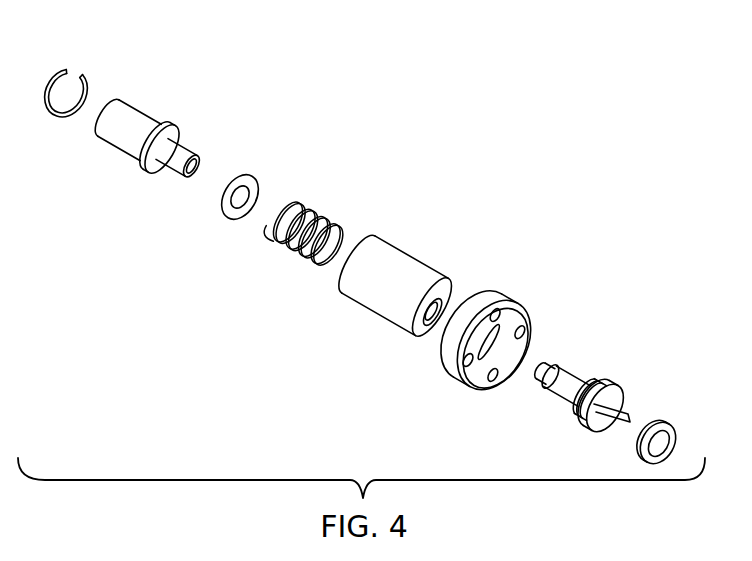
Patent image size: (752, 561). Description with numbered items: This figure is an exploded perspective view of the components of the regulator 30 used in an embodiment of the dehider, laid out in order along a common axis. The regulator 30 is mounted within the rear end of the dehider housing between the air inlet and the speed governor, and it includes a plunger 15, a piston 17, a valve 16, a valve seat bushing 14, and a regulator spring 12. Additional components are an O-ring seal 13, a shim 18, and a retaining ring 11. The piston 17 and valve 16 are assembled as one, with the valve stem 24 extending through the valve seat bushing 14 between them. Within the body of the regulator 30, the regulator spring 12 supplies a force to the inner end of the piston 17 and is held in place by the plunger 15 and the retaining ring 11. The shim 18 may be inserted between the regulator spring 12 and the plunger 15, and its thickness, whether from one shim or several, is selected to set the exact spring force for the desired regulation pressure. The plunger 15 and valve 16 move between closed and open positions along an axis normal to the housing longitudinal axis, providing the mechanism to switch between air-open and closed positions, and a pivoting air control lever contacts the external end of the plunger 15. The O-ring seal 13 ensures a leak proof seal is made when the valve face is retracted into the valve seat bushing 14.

The regulator 30 is at (521, 73).
The retaining ring 11 is at (73, 67).
The plunger 15 is at (165, 129).
The shim 18 is at (245, 172).
The regulator spring 12 is at (325, 214).
The piston 17 is at (412, 256).
The valve seat bushing 14 is at (507, 296).
The valve 16 is at (590, 385).
The valve stem 24 is at (573, 394).
The O-ring seal 13 is at (663, 420).